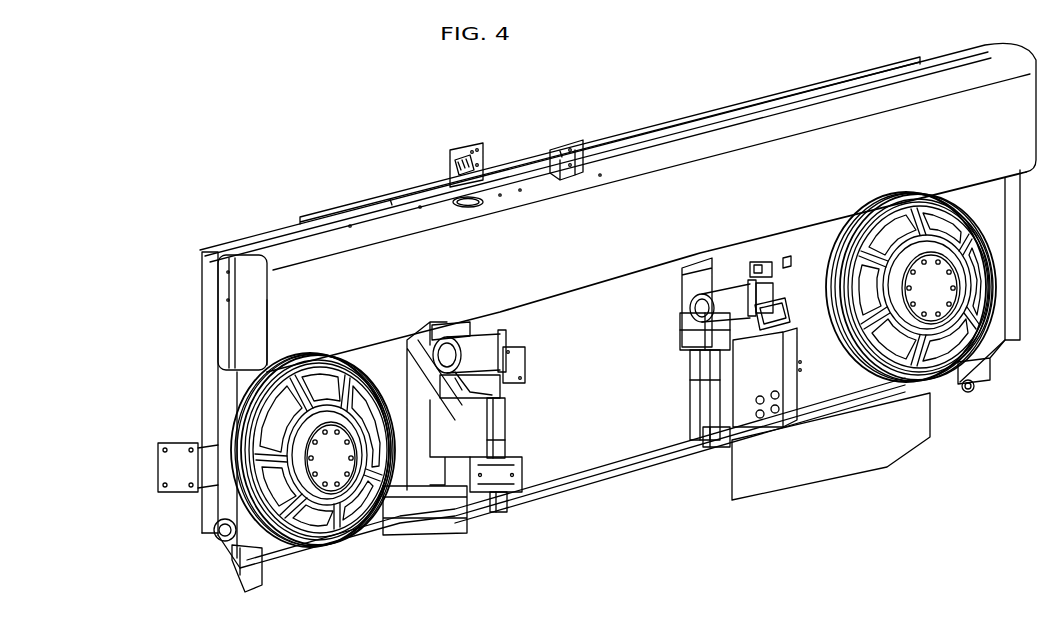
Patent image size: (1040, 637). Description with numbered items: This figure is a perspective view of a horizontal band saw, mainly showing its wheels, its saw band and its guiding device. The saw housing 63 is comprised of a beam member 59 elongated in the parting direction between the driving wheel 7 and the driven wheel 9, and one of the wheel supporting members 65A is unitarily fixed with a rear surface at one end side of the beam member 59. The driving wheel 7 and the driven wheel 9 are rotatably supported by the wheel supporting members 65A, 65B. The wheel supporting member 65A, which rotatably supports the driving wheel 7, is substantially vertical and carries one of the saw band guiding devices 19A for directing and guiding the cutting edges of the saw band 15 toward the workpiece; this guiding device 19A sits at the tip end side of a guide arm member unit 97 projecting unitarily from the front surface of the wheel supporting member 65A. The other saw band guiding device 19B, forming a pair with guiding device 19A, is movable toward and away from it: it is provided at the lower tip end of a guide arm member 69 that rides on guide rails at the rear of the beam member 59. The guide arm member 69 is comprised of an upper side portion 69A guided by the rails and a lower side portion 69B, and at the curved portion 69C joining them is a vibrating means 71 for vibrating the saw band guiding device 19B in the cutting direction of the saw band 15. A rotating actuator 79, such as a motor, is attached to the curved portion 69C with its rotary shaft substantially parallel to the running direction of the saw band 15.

The driving wheel 7 is at (970, 243).
The driven wheel 9 is at (300, 530).
The saw band 15 is at (607, 463).
The saw band guiding device 19A is at (712, 455).
The saw band guiding device 19B is at (492, 517).
The beam member 59 is at (608, 237).
The saw housing 63 is at (612, 118).
The wheel supporting member 65A is at (822, 242).
The wheel supporting member 65B is at (245, 388).
The guide arm member 69 is at (417, 357).
The upper side portion 69A is at (444, 333).
The lower side portion 69B is at (470, 428).
The curved portion 69C is at (480, 402).
The vibrating means 71 is at (530, 360).
The rotating actuator 79 is at (468, 343).
The guide arm member unit 97 is at (792, 350).